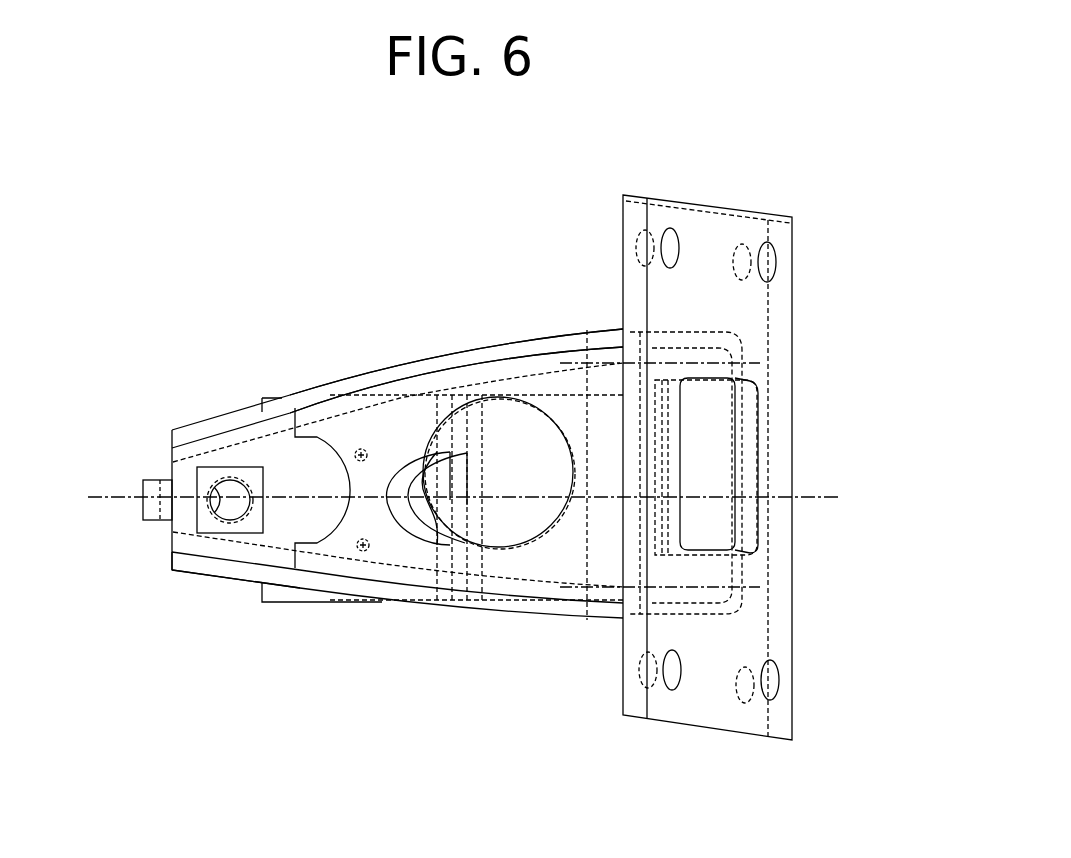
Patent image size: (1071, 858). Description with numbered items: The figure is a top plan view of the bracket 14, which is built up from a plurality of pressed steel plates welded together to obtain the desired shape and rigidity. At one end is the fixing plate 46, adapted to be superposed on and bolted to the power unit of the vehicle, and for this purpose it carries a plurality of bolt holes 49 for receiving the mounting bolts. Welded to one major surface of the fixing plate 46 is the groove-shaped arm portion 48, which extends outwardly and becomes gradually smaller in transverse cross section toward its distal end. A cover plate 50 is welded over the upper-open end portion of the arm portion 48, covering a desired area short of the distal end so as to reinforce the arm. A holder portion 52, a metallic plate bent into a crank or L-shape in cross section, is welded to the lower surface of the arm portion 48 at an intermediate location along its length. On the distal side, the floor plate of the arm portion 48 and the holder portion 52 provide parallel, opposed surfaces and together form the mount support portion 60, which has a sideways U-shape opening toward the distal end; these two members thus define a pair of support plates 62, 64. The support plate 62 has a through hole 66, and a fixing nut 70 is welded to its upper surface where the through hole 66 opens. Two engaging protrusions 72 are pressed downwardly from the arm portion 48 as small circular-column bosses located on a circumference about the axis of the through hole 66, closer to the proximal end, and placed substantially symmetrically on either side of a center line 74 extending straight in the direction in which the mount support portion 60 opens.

The bracket 14 is at (516, 268).
The fixing plate 46 is at (713, 228).
The arm portion 48 is at (537, 343).
The bolt holes 49 is at (672, 236).
The cover plate 50 is at (499, 372).
The holder portion 52 is at (307, 603).
The mount support portion 60 is at (208, 579).
The support plate 62 is at (240, 455).
The support plate 64 is at (280, 594).
The through hole 66 is at (222, 498).
The fixing nut 70 is at (183, 465).
The engaging protrusions 72 is at (360, 449).
The center line 74 is at (819, 497).